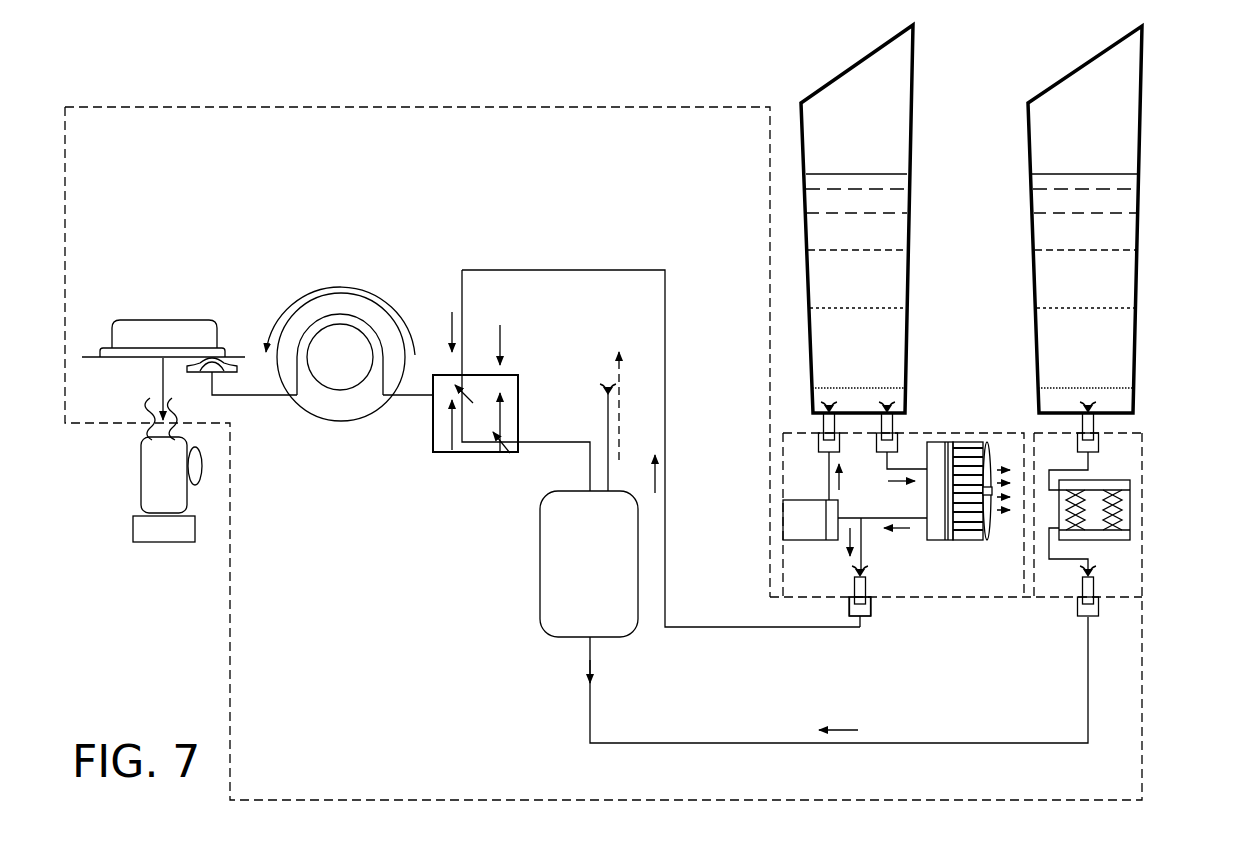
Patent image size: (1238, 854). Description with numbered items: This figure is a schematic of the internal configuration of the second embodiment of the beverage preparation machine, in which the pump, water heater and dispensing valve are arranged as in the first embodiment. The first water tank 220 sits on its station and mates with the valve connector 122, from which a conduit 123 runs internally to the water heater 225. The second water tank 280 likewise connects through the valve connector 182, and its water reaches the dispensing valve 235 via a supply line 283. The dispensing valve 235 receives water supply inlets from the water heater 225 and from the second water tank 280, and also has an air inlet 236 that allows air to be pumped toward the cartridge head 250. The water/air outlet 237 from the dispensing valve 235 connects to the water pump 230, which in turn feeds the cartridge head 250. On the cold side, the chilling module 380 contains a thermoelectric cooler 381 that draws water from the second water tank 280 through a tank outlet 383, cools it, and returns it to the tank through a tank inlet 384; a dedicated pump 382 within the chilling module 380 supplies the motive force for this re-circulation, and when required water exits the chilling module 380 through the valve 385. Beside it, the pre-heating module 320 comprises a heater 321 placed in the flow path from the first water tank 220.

The valve connector 122 is at (1080, 617).
The conduit 123 is at (902, 743).
The valve connector 182 is at (870, 617).
The first water tank 220 is at (1143, 82).
The water heater 225 is at (540, 568).
The water pump 230 is at (336, 412).
The dispensing valve 235 is at (472, 453).
The air inlet 236 is at (500, 342).
The water/air outlet 237 is at (417, 398).
The cartridge head 250 is at (163, 306).
The second water tank 280 is at (914, 82).
The supply conduit 283 is at (763, 627).
The pre-heating module 320 is at (1149, 430).
The heater 321 is at (1132, 512).
The chilling module 380 is at (938, 603).
The thermoelectric cooler 381 is at (957, 542).
The dedicated pump 382 is at (797, 520).
The tank outlet 383 is at (893, 422).
The tank inlet 384 is at (823, 422).
The valve 385 is at (853, 572).